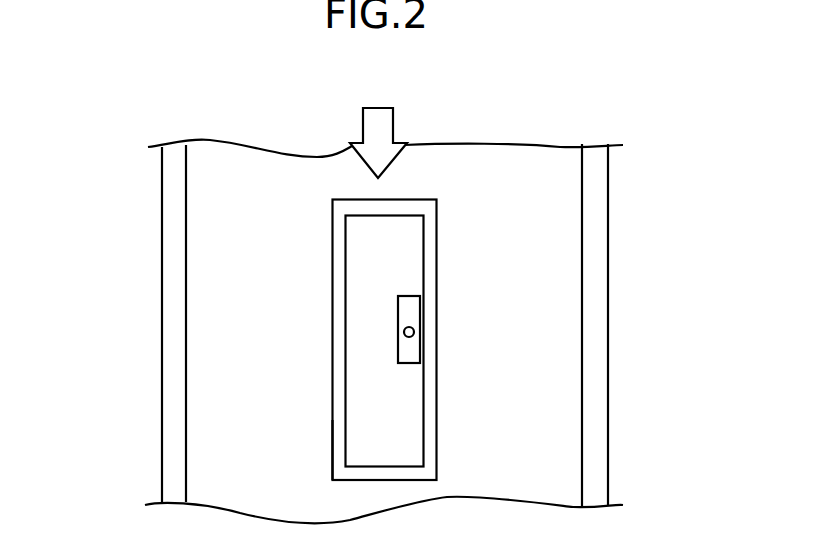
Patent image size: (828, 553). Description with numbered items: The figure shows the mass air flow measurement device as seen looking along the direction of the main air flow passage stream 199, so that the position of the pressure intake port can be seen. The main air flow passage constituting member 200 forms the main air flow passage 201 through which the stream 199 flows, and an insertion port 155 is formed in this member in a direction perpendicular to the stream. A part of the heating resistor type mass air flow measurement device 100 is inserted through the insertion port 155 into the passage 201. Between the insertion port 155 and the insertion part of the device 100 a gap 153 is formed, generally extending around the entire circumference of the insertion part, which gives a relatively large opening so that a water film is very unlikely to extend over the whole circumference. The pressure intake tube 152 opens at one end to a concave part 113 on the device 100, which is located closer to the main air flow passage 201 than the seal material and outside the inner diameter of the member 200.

The heating resistor type mass air flow measurement device 100 is at (368, 312).
The concave part 113 is at (400, 352).
The pressure intake tube 152 is at (413, 328).
The gap 153 is at (338, 385).
The insertion port 155 is at (332, 439).
The main air flow passage stream 199 is at (384, 128).
The main air flow passage constituting member 200 is at (595, 450).
The main air flow passage 201 is at (522, 397).